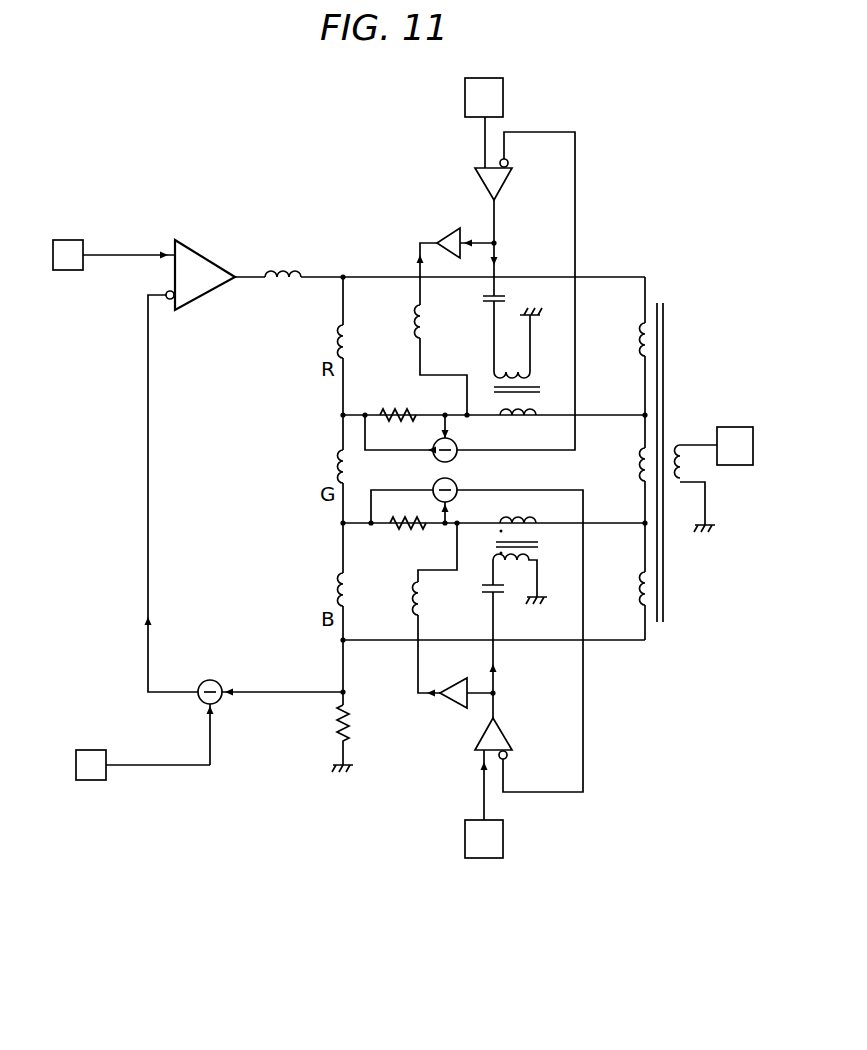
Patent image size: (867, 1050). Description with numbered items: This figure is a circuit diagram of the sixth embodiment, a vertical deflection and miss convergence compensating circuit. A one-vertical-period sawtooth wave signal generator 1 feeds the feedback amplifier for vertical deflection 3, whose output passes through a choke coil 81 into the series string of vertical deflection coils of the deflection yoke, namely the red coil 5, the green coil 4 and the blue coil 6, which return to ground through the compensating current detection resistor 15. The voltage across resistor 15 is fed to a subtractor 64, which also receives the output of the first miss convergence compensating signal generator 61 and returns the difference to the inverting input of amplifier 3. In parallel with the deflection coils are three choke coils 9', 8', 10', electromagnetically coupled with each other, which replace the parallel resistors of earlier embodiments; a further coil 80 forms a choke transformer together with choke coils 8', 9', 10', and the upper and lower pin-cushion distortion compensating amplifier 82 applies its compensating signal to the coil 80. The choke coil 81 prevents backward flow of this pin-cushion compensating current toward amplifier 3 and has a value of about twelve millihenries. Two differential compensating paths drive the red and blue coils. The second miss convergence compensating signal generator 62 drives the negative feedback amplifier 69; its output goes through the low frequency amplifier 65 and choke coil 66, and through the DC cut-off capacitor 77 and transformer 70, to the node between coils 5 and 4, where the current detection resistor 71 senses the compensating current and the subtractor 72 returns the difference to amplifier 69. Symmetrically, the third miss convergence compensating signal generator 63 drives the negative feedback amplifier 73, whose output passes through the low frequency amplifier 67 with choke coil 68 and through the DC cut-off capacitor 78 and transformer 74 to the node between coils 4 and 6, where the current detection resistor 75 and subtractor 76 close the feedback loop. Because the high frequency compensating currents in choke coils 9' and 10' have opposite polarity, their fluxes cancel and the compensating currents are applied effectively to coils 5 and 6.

The 1V sawtooth wave signal generator 1 is at (67, 240).
The feedback amplifier for vertical deflection 3 is at (205, 243).
The choke coil 81 is at (283, 268).
The vertical deflection coil for red 5 is at (337, 338).
The vertical deflection coil for green 4 is at (337, 468).
The vertical deflection coil for blue 6 is at (337, 590).
The compensating current detection resistor 15 is at (350, 727).
The subtractor 64 is at (208, 680).
The first miss convergence compensating signal generator 61 is at (89, 750).
The second miss convergence compensating signal generator 62 is at (465, 94).
The negative feedback amplifier 69 is at (508, 180).
The low frequency amplifier 65 is at (452, 236).
The choke coil 66 is at (414, 326).
The DC cut-off capacitor 77 is at (481, 299).
The transformer 70 is at (540, 389).
The current detection resistor 71 is at (396, 409).
The subtractor 72 is at (460, 448).
The subtractor 76 is at (457, 483).
The current detection resistor 75 is at (402, 535).
The transformer 74 is at (540, 545).
The DC cut-off capacitor 78 is at (481, 590).
The choke coil 68 is at (413, 603).
The low frequency amplifier 67 is at (449, 683).
The negative feedback amplifier 73 is at (507, 734).
The third miss convergence compensating signal generator 63 is at (503, 836).
The choke coil 9' is at (617, 339).
The choke coil 8' is at (617, 464).
The choke coil 10' is at (615, 588).
The coil 80 is at (692, 468).
The upper and lower pin-cushion distortion compensating amplifier 82 is at (734, 427).